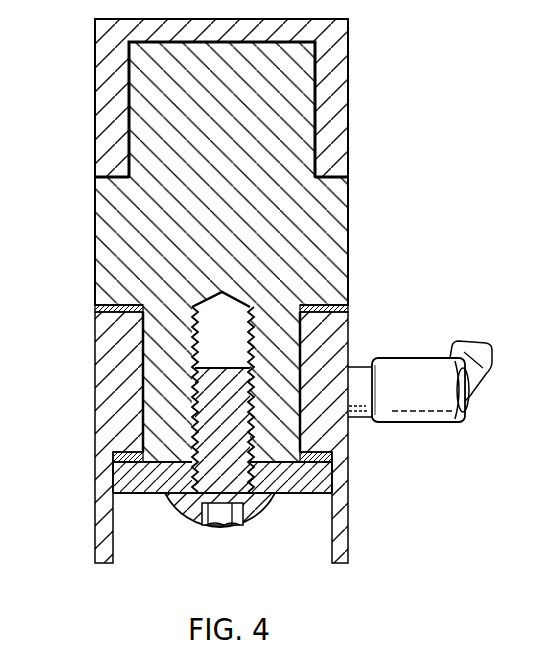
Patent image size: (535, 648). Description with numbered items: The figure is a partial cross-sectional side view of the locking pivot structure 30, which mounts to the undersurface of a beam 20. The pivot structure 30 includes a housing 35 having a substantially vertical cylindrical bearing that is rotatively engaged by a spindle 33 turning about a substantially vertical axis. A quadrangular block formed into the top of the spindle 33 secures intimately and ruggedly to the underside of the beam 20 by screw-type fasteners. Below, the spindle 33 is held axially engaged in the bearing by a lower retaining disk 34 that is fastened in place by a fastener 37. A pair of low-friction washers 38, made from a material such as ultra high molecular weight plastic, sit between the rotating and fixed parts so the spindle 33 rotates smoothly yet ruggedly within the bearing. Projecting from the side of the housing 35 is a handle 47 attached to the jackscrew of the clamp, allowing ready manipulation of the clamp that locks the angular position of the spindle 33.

The beam 20 is at (102, 81).
The locking pivot structure 30 is at (447, 200).
The spindle 33 is at (243, 252).
The lower retaining disk 34 is at (297, 497).
The housing 35 is at (102, 375).
The fastener 37 is at (183, 528).
The low-friction washers 38 is at (118, 308).
The handle 47 is at (418, 422).